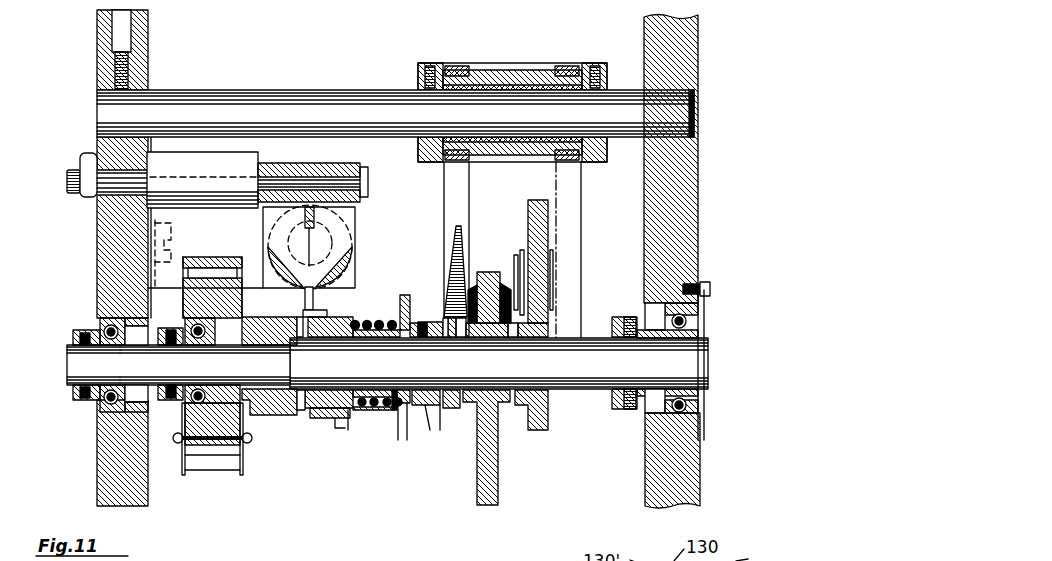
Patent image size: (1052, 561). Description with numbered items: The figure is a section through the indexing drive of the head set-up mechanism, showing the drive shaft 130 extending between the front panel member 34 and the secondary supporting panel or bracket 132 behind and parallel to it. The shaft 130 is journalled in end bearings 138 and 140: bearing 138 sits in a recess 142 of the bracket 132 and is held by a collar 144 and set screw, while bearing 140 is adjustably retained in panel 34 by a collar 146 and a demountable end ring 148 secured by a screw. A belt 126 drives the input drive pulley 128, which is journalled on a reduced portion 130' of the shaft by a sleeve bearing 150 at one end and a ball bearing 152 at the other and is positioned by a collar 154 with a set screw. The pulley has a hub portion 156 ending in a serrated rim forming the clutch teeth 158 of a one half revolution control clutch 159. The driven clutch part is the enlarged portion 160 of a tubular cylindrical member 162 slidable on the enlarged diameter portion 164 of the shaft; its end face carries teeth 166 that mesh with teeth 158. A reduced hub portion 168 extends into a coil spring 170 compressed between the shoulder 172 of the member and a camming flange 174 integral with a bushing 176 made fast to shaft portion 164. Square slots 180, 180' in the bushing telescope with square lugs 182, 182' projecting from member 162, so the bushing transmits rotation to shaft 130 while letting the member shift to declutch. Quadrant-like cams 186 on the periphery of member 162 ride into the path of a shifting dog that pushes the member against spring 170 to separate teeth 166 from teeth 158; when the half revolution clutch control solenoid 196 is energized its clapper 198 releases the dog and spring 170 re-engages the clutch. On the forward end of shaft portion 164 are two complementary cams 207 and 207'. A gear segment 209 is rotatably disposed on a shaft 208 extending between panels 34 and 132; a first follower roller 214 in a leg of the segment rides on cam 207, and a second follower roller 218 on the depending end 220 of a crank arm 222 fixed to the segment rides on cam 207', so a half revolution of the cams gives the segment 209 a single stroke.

The panel member 34 is at (690, 58).
The belt 126 is at (212, 258).
The input drive pulley 128 is at (203, 275).
The shaft 130 is at (151, 365).
The reduced portion of shaft 130' is at (83, 392).
The secondary supporting panel or bracket 132 is at (103, 52).
The end bearing 138 is at (107, 328).
The end bearing 140 is at (700, 324).
The recess 142 is at (112, 318).
The collar 144 is at (75, 338).
The collar 146 is at (632, 320).
The demountable end ring 148 is at (705, 440).
The sleeve bearing 150 is at (270, 340).
The ball bearing 152 is at (190, 390).
The collar 154 is at (182, 335).
The hub portion 156 is at (262, 402).
The clutch teeth 158 is at (296, 412).
The one half revolution control clutch 159 is at (309, 460).
The enlarged portion 160 is at (352, 314).
The tubular cylindrical member 162 is at (348, 428).
The enlarged diameter portion 164 is at (698, 352).
The teeth 166 is at (322, 418).
The hub portion 168 is at (338, 428).
The coil spring 170 is at (405, 300).
The shoulder 172 is at (380, 408).
The camming flange 174 is at (413, 407).
The bushing 176 is at (430, 408).
The transverse square slots 180 is at (431, 313).
The seal ring 180' is at (447, 436).
The square lugs 182 is at (374, 311).
The balls 182' is at (383, 429).
The quadrant-like cams 186 is at (318, 318).
The half revolution clutch control solenoid 196 is at (356, 262).
The solenoid clapper 198 is at (281, 242).
The complementary cam 207 is at (561, 424).
The complementary cam 207' is at (514, 447).
The shaft 208 is at (258, 104).
The gear segment 209 is at (588, 219).
The first follower roller 214 is at (548, 262).
The second follower roller 218 is at (498, 272).
The depending end 220 is at (447, 232).
The crank arm 222 is at (447, 202).